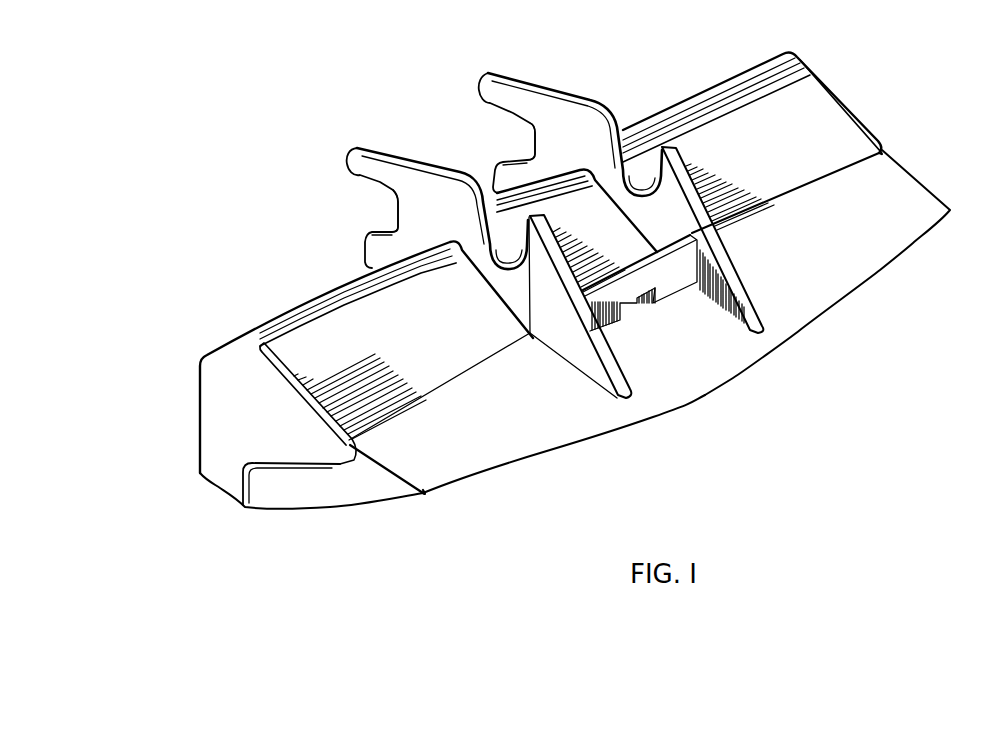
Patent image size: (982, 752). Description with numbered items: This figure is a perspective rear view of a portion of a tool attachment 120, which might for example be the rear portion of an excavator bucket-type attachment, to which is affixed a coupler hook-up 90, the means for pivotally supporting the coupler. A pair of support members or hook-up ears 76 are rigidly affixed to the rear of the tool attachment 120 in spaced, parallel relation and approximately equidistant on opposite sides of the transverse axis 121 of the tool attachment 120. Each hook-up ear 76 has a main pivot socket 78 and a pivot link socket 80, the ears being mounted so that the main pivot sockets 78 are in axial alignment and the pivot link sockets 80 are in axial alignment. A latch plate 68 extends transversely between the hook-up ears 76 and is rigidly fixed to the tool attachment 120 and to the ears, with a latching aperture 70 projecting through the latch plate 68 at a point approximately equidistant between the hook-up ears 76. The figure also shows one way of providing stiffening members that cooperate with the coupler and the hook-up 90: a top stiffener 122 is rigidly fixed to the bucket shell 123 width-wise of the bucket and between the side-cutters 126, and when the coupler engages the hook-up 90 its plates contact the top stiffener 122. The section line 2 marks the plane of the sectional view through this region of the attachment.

The section line 2- 2 is at (347, 140).
The latch plate 68 is at (673, 280).
The latching aperture 70 is at (624, 320).
The hook-up ear 76 is at (400, 175).
The main pivot socket 78 is at (388, 210).
The pivot link socket 80 is at (500, 248).
The coupler hook-up 90 is at (628, 57).
The tool attachment 120 is at (370, 480).
The transverse axis 121 is at (712, 358).
The top stiffener 122 is at (353, 330).
The bucket shell 123 is at (532, 423).
The side-cutter 126 is at (220, 393).